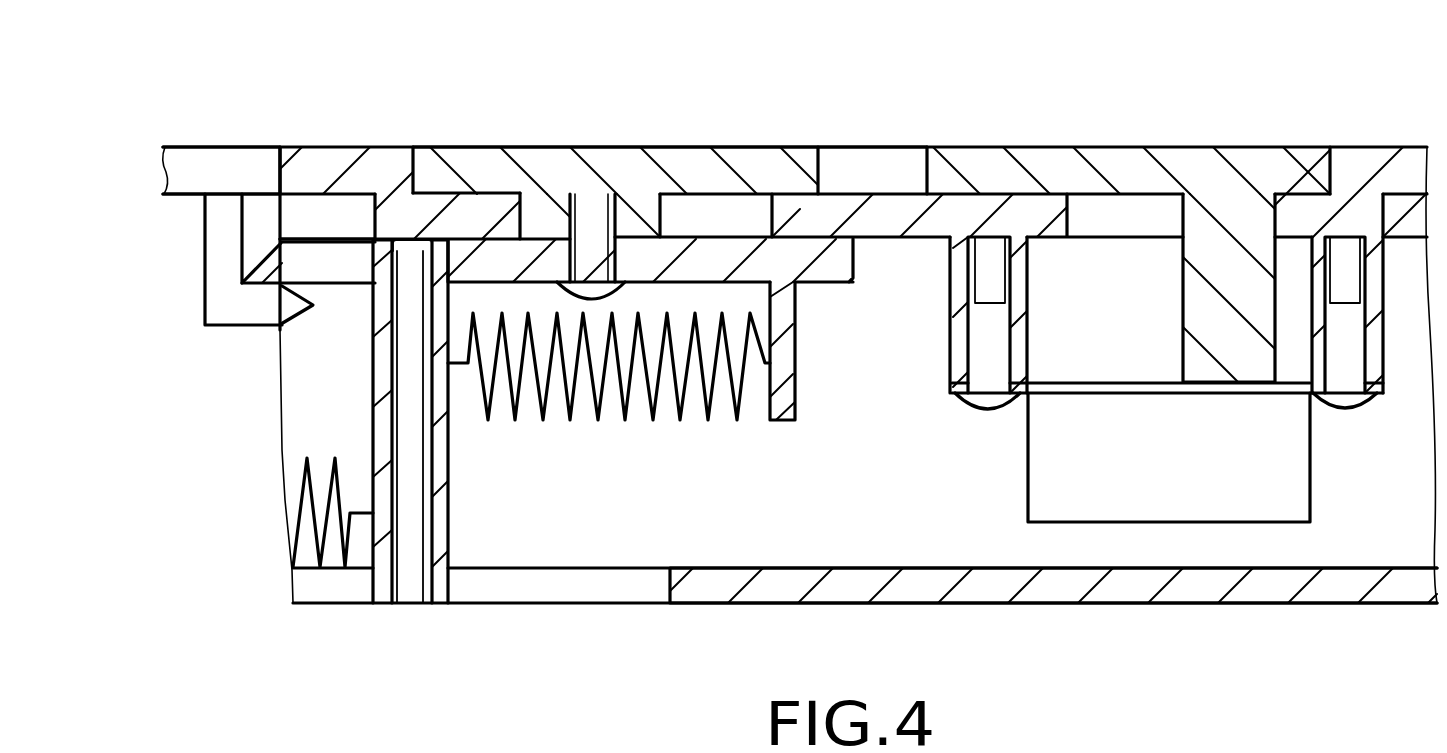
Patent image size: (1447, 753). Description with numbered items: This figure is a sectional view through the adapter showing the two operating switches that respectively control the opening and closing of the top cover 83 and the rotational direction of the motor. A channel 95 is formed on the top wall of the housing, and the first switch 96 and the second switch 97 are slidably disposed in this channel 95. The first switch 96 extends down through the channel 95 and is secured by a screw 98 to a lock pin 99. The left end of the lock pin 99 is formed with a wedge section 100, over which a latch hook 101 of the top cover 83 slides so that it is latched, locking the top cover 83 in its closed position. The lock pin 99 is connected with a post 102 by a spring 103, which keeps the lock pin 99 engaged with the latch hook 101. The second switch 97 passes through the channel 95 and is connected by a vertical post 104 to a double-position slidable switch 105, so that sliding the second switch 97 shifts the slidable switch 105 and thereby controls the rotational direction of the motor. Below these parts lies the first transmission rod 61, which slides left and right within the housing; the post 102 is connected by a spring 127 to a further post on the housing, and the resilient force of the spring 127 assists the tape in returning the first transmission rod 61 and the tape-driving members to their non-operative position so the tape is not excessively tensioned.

The top cover 83 is at (212, 146).
The first switch 96 is at (742, 147).
The channel 95 is at (873, 170).
The second switch 97 is at (1188, 147).
The screw 98 is at (584, 196).
The lock pin 99 is at (828, 283).
The wedge section 100 is at (272, 268).
The latch hook 101 is at (292, 323).
The post 102 is at (448, 466).
The spring 103 is at (683, 397).
The vertical post 104 is at (1183, 310).
The double-position slidable switch 105 is at (1310, 468).
The spring 127 is at (297, 503).
The first transmission rod 61 is at (1052, 603).